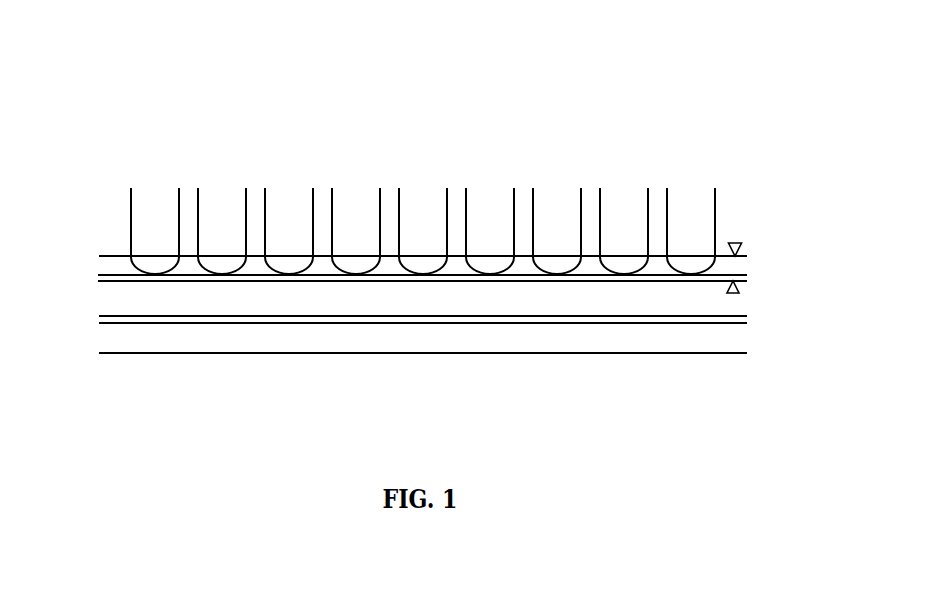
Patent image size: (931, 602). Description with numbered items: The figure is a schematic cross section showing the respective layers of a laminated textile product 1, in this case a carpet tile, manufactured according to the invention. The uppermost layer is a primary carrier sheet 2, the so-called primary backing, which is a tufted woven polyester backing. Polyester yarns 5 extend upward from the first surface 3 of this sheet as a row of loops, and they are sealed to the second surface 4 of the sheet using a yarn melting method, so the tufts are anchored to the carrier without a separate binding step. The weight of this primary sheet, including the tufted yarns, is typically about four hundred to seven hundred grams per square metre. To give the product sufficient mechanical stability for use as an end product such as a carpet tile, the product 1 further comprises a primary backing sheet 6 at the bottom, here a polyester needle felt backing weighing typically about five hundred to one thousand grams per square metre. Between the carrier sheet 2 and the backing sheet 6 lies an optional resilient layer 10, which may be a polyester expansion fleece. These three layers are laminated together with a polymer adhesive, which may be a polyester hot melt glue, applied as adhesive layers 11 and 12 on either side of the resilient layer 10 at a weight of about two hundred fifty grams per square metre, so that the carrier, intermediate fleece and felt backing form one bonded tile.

The laminated textile product 1 is at (110, 133).
The primary carrier sheet 2 is at (100, 265).
The first surface 3 is at (735, 243).
The second surface 4 is at (733, 293).
The polyester yarns 5 is at (335, 196).
The primary backing sheet 6 is at (435, 343).
The resilient layer 10 is at (105, 301).
The adhesive layer 11 is at (746, 278).
The adhesive layer 12 is at (744, 320).